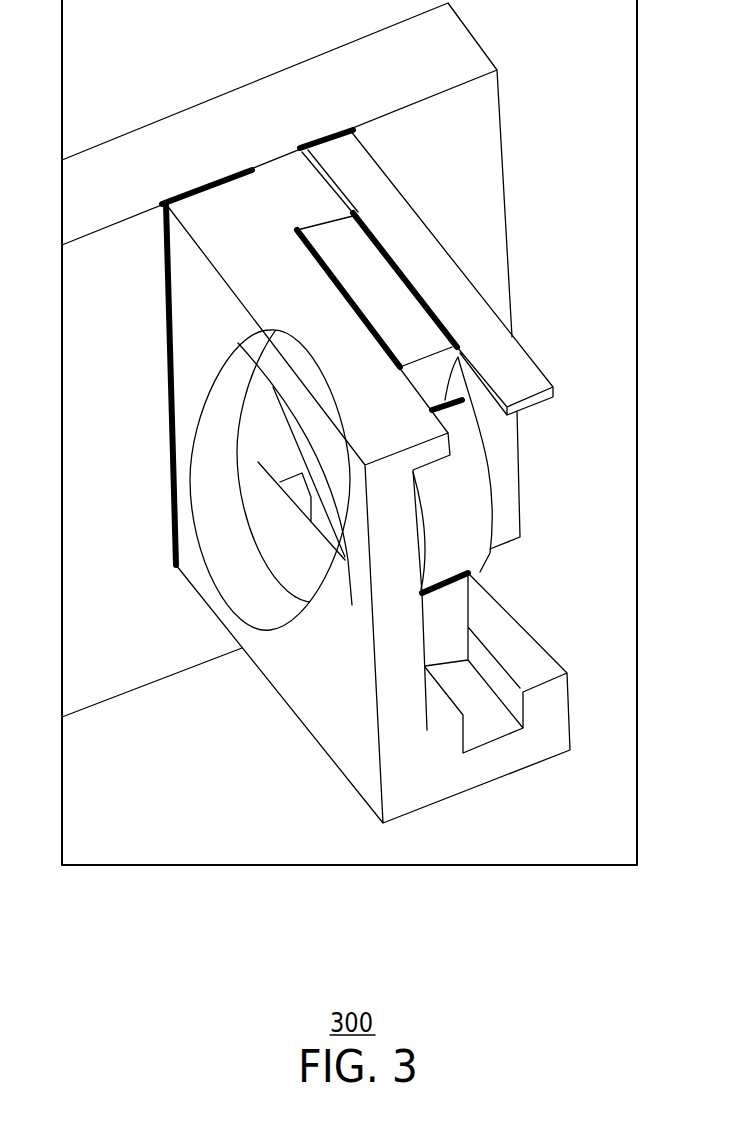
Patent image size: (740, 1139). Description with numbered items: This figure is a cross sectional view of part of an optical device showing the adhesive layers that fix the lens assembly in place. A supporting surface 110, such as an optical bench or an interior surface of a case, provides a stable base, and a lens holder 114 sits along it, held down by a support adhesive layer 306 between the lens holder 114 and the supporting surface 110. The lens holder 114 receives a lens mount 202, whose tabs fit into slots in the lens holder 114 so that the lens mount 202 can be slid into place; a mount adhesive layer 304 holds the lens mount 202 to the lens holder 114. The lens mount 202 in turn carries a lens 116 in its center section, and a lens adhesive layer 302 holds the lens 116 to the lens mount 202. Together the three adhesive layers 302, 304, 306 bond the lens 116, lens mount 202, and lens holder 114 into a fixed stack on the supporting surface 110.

The supporting surface 110 is at (500, 95).
The lens holder 114 is at (348, 782).
The lens 116 is at (457, 493).
The lens mount 202 is at (397, 303).
The lens adhesive layer 302 is at (447, 400).
The mount adhesive layer 304 is at (338, 288).
The support adhesive layer 306 is at (353, 210).